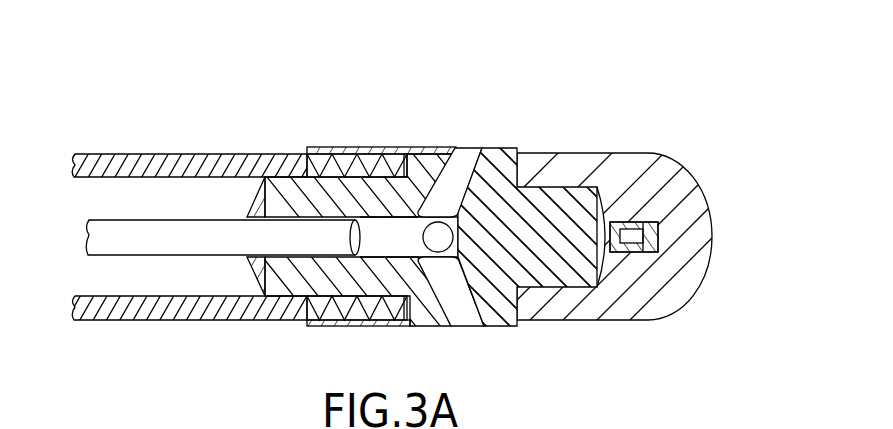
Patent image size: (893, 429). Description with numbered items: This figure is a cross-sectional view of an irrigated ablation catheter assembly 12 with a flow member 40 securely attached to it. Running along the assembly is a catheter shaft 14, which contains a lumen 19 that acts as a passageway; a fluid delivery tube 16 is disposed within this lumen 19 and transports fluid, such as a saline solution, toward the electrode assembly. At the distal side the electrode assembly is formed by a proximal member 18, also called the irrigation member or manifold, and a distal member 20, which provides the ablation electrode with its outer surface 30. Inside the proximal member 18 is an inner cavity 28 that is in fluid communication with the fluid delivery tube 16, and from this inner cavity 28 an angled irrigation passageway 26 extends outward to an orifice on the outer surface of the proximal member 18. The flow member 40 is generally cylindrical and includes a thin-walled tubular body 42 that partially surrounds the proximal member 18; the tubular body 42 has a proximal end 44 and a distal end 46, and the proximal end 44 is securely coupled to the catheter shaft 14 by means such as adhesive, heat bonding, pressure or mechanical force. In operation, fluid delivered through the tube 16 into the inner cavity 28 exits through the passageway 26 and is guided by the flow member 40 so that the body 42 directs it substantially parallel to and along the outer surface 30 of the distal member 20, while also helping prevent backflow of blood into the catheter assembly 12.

The irrigated ablation catheter assembly 12 is at (256, 62).
The catheter shaft 14 is at (193, 156).
The fluid delivery tube 16 is at (157, 247).
The proximal member 18 is at (501, 318).
The lumen 19 is at (103, 282).
The distal member 20 is at (710, 120).
The irrigation passageway 26 is at (469, 157).
The inner cavity 28 is at (376, 243).
The outer surface 30 is at (643, 152).
The flow member 40 is at (437, 95).
The tubular body 42 is at (377, 151).
The proximal end 44 is at (310, 152).
The distal end 46 is at (505, 152).